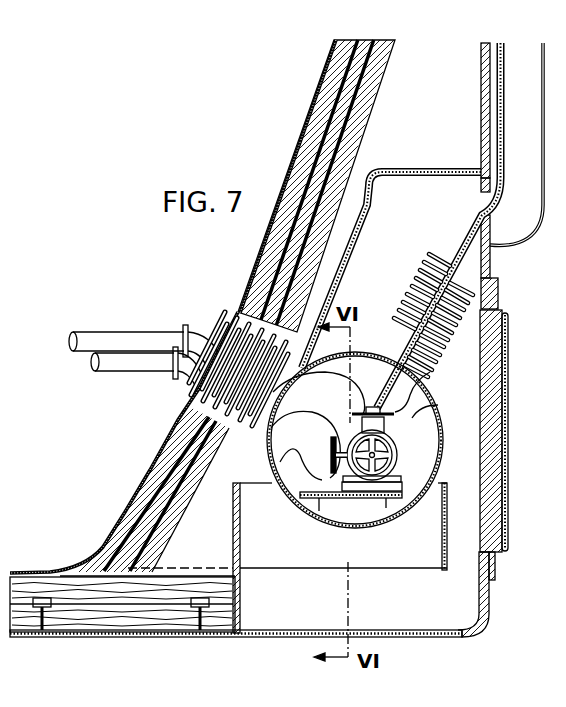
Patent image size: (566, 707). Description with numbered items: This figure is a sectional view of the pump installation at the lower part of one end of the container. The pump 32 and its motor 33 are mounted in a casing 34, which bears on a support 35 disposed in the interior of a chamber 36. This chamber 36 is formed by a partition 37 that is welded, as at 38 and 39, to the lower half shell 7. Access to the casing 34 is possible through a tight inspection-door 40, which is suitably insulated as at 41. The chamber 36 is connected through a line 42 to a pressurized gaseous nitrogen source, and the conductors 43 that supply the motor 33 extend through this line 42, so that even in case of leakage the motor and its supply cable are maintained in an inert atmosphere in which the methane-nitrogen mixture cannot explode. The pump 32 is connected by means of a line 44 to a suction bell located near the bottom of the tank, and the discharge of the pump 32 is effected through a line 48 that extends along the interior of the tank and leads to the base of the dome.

The lower half shell 7 is at (103, 637).
The pump 32 is at (402, 461).
The motor 33 is at (392, 437).
The casing 34 is at (441, 419).
The support 35 is at (350, 499).
The chamber 36 is at (464, 446).
The partition 37 is at (357, 230).
The weld 38 is at (481, 168).
The weld 39 is at (218, 637).
The tight inspection-door 40 is at (506, 468).
The insulation 41 is at (490, 386).
The line 42 is at (474, 268).
The conductors 43 is at (498, 118).
The line 44 is at (130, 366).
The line 48 is at (115, 343).